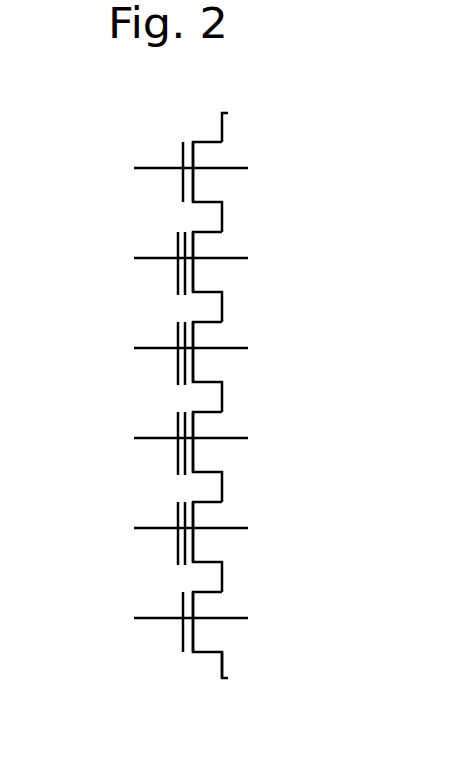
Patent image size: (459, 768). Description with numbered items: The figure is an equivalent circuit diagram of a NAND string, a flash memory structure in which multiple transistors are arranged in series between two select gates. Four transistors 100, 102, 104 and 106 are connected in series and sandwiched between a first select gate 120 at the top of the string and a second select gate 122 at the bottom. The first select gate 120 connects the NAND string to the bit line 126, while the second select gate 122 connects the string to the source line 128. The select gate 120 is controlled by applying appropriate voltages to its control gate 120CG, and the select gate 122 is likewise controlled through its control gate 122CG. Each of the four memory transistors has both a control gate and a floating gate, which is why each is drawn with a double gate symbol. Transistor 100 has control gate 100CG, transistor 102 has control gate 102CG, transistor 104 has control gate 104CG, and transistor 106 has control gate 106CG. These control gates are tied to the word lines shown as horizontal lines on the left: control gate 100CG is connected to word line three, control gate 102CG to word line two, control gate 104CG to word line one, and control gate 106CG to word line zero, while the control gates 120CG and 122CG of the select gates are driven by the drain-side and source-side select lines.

The bit line 126 is at (228, 113).
The source line 128 is at (228, 678).
The first select gate 120 is at (227, 158).
The control gate 120CG is at (183, 160).
The transistor 100 is at (227, 248).
The control gate 100CG is at (178, 246).
The transistor 102 is at (227, 338).
The control gate 102CG is at (178, 336).
The transistor 104 is at (227, 428).
The control gate 104CG is at (178, 426).
The transistor 106 is at (227, 518).
The control gate 106CG is at (178, 516).
The second select gate 122 is at (227, 608).
The control gate 122CG is at (183, 610).